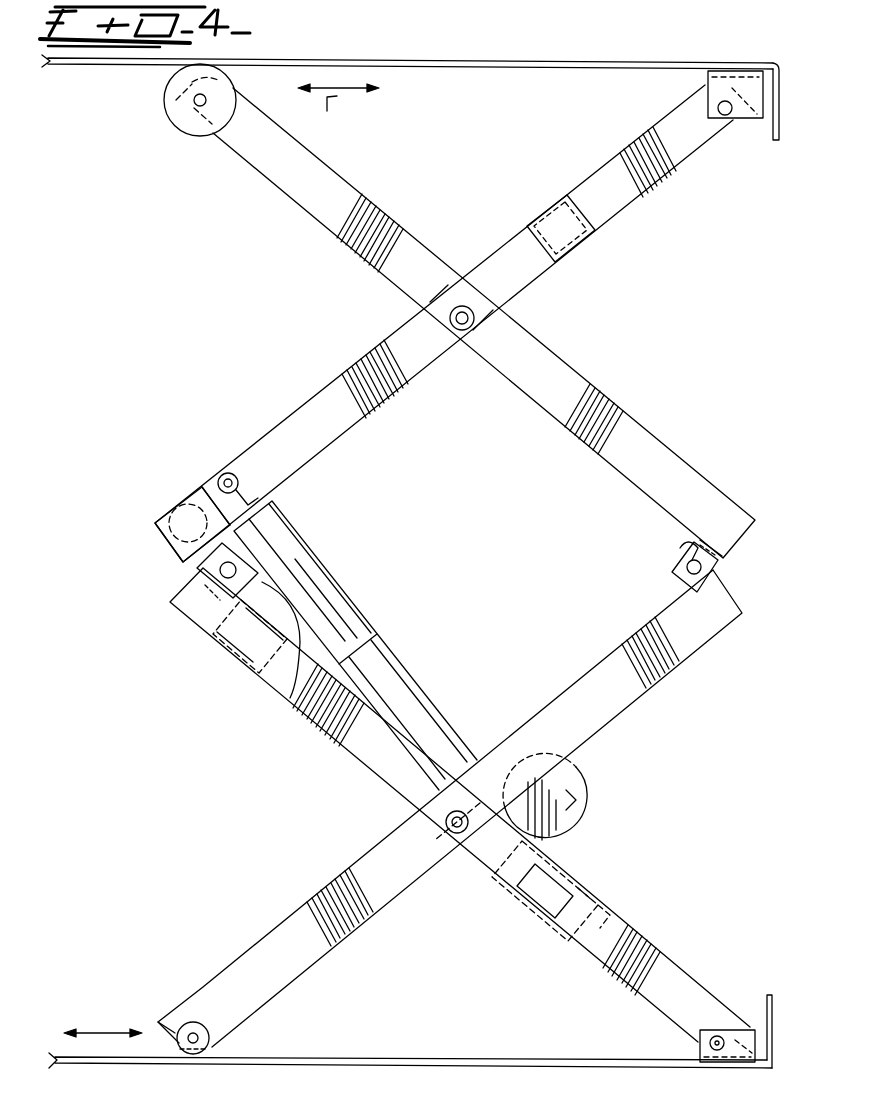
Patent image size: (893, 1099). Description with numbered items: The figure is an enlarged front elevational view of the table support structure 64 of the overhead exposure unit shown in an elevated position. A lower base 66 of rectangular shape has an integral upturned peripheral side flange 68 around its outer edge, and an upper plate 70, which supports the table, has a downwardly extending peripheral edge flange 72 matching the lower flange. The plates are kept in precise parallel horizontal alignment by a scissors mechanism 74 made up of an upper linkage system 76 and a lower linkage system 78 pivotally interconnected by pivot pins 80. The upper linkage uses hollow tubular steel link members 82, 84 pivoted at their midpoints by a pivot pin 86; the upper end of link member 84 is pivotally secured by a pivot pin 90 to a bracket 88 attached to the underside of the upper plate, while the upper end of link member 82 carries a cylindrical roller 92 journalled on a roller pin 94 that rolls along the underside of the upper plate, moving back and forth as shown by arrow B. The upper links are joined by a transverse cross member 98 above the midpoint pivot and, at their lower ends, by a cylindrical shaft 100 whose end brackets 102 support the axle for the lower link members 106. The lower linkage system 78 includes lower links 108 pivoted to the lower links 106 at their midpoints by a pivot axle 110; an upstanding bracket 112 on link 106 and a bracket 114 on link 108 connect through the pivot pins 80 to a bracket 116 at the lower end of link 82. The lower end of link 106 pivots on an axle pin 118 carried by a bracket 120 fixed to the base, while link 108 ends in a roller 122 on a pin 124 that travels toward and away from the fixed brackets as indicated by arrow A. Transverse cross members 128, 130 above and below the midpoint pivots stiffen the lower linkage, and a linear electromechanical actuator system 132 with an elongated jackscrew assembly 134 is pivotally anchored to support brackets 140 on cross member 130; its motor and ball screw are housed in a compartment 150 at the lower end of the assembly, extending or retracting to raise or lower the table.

The table support structure 64 is at (225, 787).
The lower base 66 is at (531, 1066).
The upturned peripheral side flange 68 is at (774, 1055).
The upper plate 70 is at (432, 56).
The peripheral edge flange 72 is at (781, 116).
The scissors mechanism 74 is at (745, 569).
The upper linkage system 76 is at (400, 308).
The lower linkage system 78 is at (400, 806).
The pivot pin 80 is at (197, 570).
The link member 82 is at (318, 158).
The link member 84 is at (645, 196).
The pivot pin 86 is at (466, 331).
The bracket 88 is at (755, 118).
The pivot pin 90 is at (733, 122).
The cylindrical roller 92 is at (190, 133).
The roller pin 94 is at (185, 84).
The transverse cross member 98 is at (583, 205).
The cylindrical shaft 100 is at (190, 498).
The bracket 102 is at (252, 528).
The lower link member 106 is at (207, 638).
The lower link 108 is at (616, 716).
The pivot axle 110 is at (457, 835).
The upstanding bracket 112 is at (294, 656).
The bracket 114 is at (684, 550).
The bracket 116 is at (703, 548).
The axle pin 118 is at (716, 1034).
The bracket 120 is at (752, 1064).
The roller 122 is at (212, 1039).
The pin 124 is at (192, 1021).
The transverse cross member 128 is at (223, 670).
The transverse cross member 130 is at (607, 901).
The linear electromechanical actuator system 132 is at (472, 687).
The jackscrew assembly 134 is at (468, 713).
The support bracket 140 is at (503, 896).
The compartment 150 is at (591, 801).